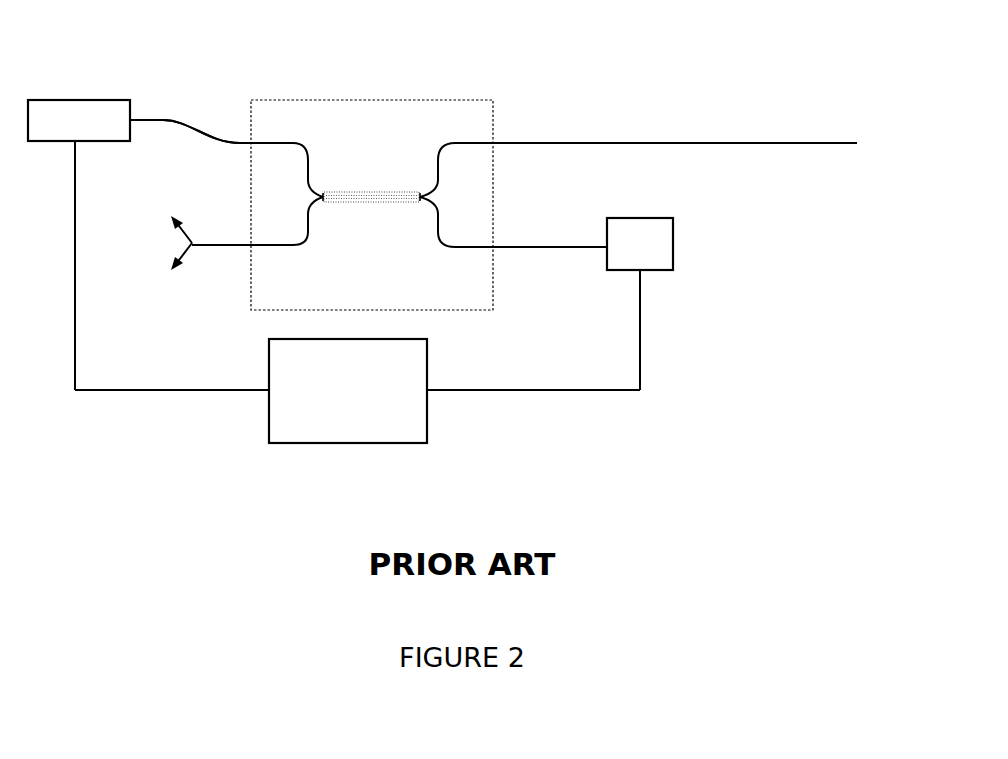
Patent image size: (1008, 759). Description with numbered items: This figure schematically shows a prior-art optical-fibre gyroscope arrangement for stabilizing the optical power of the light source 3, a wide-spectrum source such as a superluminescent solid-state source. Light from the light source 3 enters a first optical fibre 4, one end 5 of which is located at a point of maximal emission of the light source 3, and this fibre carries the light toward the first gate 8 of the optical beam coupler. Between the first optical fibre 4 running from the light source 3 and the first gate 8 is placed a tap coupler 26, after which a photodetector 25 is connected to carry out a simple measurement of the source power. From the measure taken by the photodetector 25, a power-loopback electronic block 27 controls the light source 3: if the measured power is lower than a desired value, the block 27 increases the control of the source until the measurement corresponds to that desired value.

The light source 3 is at (105, 100).
The first optical fibre 4 is at (207, 137).
The end of the first optical fibre 5 is at (130, 118).
The first gate 8 is at (857, 143).
The photodetector 25 is at (673, 262).
The tap coupler 26 is at (405, 100).
The power-loopback electronic block 27 is at (269, 352).